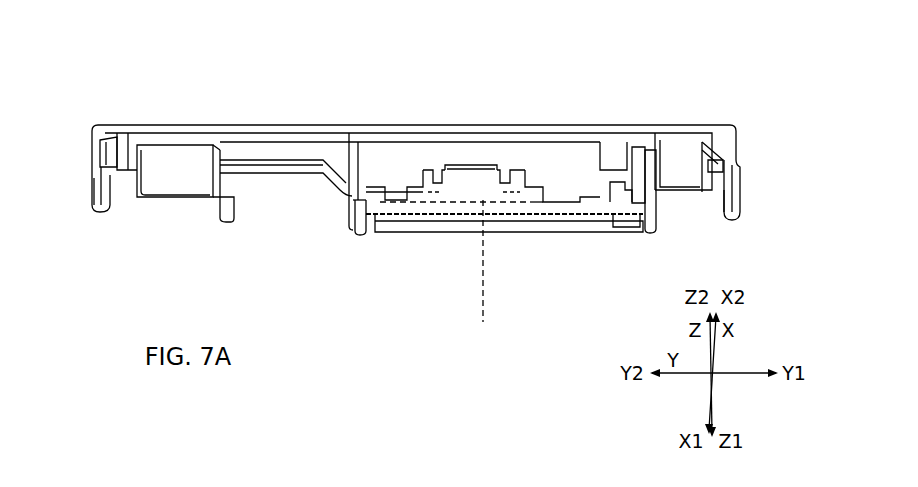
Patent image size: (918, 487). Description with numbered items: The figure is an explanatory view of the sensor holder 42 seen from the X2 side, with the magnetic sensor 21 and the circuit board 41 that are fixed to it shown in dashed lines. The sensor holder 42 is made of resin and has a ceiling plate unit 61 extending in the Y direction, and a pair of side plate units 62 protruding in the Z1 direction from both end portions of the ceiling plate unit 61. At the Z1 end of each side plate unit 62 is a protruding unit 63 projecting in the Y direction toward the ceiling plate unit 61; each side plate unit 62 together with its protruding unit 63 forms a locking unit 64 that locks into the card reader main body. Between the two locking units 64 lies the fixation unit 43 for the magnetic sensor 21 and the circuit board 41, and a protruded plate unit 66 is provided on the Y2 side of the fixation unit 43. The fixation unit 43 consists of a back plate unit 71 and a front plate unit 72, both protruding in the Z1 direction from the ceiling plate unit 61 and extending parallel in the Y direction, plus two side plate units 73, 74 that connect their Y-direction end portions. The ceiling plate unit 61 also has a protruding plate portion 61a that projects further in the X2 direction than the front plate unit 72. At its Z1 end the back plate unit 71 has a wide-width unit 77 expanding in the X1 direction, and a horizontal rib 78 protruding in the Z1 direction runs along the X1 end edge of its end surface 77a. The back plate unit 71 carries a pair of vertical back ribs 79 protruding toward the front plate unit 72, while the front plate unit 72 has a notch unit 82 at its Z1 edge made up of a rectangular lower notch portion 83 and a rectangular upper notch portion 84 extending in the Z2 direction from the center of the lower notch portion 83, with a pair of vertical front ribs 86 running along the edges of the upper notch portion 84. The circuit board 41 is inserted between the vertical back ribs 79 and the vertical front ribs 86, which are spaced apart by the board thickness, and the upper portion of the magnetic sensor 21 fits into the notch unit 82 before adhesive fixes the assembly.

The sensor holder 42 is at (127, 104).
The ceiling plate unit 61 is at (193, 125).
The protruding plate portion 61a is at (552, 138).
The side plate unit 62 is at (96, 178).
The protruding unit 63 is at (118, 222).
The locking unit 64 is at (87, 219).
The protruded plate unit 66 is at (190, 205).
The fixation unit 43 is at (340, 189).
The front plate unit 72 is at (384, 155).
The side plate unit 74 is at (351, 212).
The back plate unit 71 is at (371, 232).
The notch unit 82 is at (418, 53).
The lower notch portion 83 is at (428, 142).
The upper notch portion 84 is at (465, 143).
The vertical front rib 86 is at (460, 142).
The vertical back rib 79 is at (423, 203).
The magnetic sensor 21 is at (482, 272).
The circuit board 41 is at (520, 228).
The horizontal rib 78 is at (553, 232).
The wide-width unit 77 is at (622, 230).
The end surface 77a is at (617, 228).
The side plate unit 73 is at (656, 218).